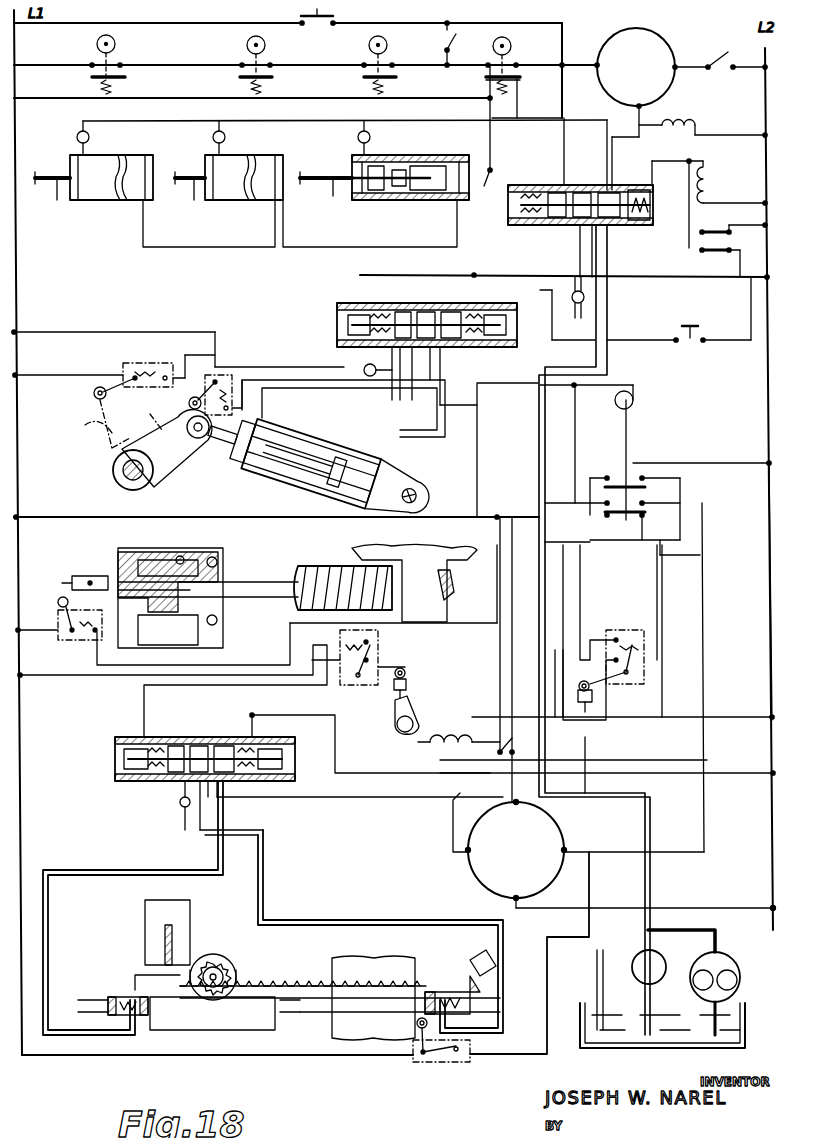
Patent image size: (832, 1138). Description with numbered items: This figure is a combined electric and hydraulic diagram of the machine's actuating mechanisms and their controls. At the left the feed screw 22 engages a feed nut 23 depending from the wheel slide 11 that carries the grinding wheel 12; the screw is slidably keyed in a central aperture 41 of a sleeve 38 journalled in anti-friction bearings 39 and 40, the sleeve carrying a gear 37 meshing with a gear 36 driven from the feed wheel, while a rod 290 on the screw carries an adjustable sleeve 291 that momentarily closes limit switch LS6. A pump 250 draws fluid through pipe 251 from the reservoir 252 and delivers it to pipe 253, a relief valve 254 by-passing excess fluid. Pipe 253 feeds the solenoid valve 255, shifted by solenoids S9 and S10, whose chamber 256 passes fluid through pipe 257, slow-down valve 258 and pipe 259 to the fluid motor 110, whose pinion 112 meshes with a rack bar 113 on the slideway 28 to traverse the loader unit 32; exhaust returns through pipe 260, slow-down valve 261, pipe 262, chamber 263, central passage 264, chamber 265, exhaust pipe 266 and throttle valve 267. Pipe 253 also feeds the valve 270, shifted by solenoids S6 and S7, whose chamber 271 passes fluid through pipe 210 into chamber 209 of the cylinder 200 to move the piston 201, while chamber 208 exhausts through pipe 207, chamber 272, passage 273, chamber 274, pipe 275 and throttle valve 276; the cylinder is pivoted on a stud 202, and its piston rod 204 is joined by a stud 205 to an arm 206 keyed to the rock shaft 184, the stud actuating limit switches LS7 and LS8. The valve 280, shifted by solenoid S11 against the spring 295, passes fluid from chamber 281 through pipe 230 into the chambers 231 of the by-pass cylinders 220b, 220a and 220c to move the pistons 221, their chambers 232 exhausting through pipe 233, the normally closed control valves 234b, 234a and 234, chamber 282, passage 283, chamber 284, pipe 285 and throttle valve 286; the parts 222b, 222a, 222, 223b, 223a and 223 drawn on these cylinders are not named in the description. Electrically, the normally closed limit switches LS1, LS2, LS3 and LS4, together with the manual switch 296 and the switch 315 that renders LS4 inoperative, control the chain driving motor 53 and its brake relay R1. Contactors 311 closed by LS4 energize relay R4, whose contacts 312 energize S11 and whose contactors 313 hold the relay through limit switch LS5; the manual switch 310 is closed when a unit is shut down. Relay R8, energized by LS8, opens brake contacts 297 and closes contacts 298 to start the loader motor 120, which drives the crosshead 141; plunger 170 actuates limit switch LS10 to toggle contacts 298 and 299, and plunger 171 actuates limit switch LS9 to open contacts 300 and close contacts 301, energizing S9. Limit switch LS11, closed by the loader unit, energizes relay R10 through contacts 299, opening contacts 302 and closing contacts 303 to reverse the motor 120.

The wheel slide 11 is at (396, 550).
The grinding wheel 12 is at (163, 940).
The feed screw 22 is at (302, 568).
The feed nut 23 is at (420, 572).
The slideway 28 is at (288, 1010).
The loader unit 32 is at (236, 1018).
The gear 36 is at (200, 648).
The gear 37 is at (184, 556).
The rotatable sleeve 38 is at (220, 568).
The anti-friction bearing 39 is at (140, 552).
The anti-friction bearing 40 is at (216, 556).
The central aperture 41 is at (118, 556).
The motor 53 is at (664, 54).
The fluid motor 110 is at (211, 954).
The driven pinion 112 is at (220, 968).
The rack bar 113 is at (272, 978).
The motor 120 is at (482, 870).
The loader unit crosshead 141 is at (396, 738).
The plunger 170 is at (408, 684).
The plunger 171 is at (592, 700).
The rock shaft 184 is at (124, 480).
The cylinder 200 is at (320, 440).
The piston 201 is at (364, 452).
The stud 202 is at (412, 484).
The piston rod 204 is at (262, 462).
The stud 205 is at (198, 440).
The arm 206 is at (100, 424).
The pipe 207 is at (452, 406).
The cylinder chamber 208 is at (194, 420).
The cylinder chamber 209 is at (316, 478).
The pipe 210 is at (364, 412).
The cylinder 220a is at (268, 162).
The cylinder 220b is at (132, 162).
The cylinder 220c is at (420, 160).
The piston 221 is at (378, 200).
The stop 222 is at (319, 193).
The stop 222a is at (187, 201).
The stop 222b is at (50, 201).
The plunger rod 223 is at (322, 174).
The plunger rod 223a is at (184, 176).
The plunger rod 223b is at (44, 172).
The pipe 230 is at (370, 244).
The cylinder chamber 231 is at (436, 182).
The cylinder chamber 232 is at (352, 205).
The pipe 233 is at (370, 120).
The control valve 234 is at (357, 136).
The control valve 234a is at (221, 130).
The control valve 234b is at (80, 130).
The fluid pump 250 is at (730, 958).
The pipe 251 is at (720, 1018).
The reservoir 252 is at (746, 1036).
The pipe 253 is at (538, 432).
The pressure relief valve 254 is at (636, 958).
The solenoid actuated valve 255 is at (114, 742).
The valve chamber 256 is at (204, 740).
The pipe 257 is at (304, 918).
The slow-down valve 258 is at (450, 990).
The pipe 259 is at (318, 966).
The pipe 260 is at (140, 978).
The slow-down valve 261 is at (116, 994).
The pipe 262 is at (224, 816).
The valve chamber 263 is at (226, 740).
The central passage 264 is at (186, 740).
The valve chamber 265 is at (146, 724).
The exhaust pipe 266 is at (178, 800).
The throttle valve 267 is at (182, 822).
The solenoid actuated control valve 270 is at (337, 305).
The valve chamber 271 is at (436, 310).
The valve chamber 272 is at (456, 310).
The central passage 273 is at (420, 300).
The valve chamber 274 is at (395, 310).
The exhaust pipe 275 is at (409, 376).
The throttle valve 276 is at (362, 370).
The control valve 280 is at (632, 226).
The valve chamber 281 is at (600, 236).
The valve chamber 282 is at (626, 222).
The central passage 283 is at (575, 180).
The valve chamber 284 is at (540, 222).
The exhaust pipe 285 is at (575, 262).
The throttle valve 286 is at (576, 306).
The rod 290 is at (120, 580).
The adjustable sleeve 291 is at (72, 582).
The spring 295 is at (662, 230).
The manually operable switch 296 is at (720, 48).
The contacts 297 is at (650, 512).
The contacts 298 is at (648, 500).
The contacts 299 is at (378, 636).
The contacts 300 is at (618, 642).
The contacts 301 is at (644, 636).
The contacts 302 is at (515, 736).
The contacts 303 is at (500, 722).
The manually operable switch 310 is at (518, 152).
The contactors 311 is at (520, 82).
The contacts 312 is at (710, 229).
The contactors 313 is at (724, 248).
The manually operable switch 315 is at (450, 36).
The limit switch LS1 is at (108, 60).
The limit switch LS2 is at (258, 58).
The limit switch LS3 is at (382, 56).
The limit switch LS4 is at (505, 64).
The limit switch LS5 is at (692, 344).
The limit switch LS6 is at (153, 631).
The limit switch LS7 is at (154, 370).
The limit switch LS8 is at (228, 384).
The limit switch LS9 is at (624, 632).
The limit switch LS10 is at (379, 688).
The limit switch LS11 is at (441, 1050).
The relay switch R1 is at (682, 116).
The relay switch R4 is at (716, 168).
The relay switch R8 is at (636, 414).
The relay switch R10 is at (459, 718).
The solenoid S6 is at (513, 325).
The solenoid S7 is at (341, 325).
The solenoid S9 is at (262, 745).
The solenoid S10 is at (148, 745).
The solenoid S11 is at (570, 214).